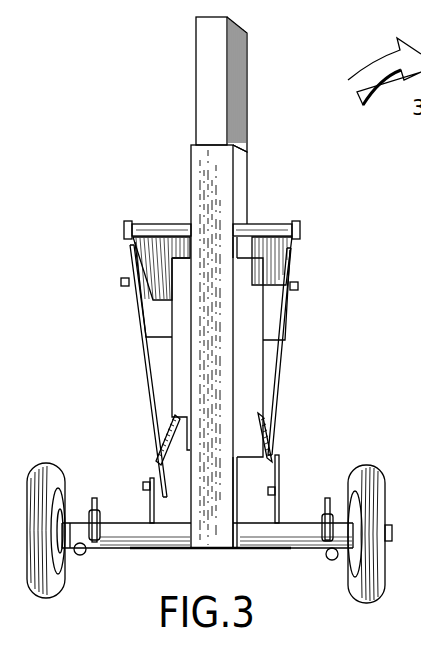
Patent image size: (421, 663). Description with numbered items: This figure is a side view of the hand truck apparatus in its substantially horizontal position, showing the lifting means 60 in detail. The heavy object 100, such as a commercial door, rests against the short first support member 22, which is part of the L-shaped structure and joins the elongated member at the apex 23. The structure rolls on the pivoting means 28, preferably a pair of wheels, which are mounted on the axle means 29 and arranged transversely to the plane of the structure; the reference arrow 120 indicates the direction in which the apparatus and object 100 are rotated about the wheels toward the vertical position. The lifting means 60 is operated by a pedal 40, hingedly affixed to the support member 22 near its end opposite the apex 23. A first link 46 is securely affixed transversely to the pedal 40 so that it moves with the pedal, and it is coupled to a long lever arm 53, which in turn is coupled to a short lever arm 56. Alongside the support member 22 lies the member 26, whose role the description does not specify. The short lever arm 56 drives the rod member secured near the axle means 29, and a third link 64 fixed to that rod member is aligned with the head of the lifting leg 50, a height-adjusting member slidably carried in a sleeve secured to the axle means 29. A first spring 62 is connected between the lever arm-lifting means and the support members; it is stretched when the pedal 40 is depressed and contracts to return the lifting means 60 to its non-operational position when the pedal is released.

The heavy object 100 is at (240, 50).
The first support member 22 is at (203, 163).
The pedal 40 is at (145, 223).
The first link 46 is at (132, 262).
The lifting means 60 is at (118, 303).
The long lever arm 53 is at (140, 332).
The bracket 26 is at (177, 360).
The first spring 62 is at (160, 423).
The short lever arm 56 is at (152, 508).
The third link 64 is at (96, 500).
The axle means 29 is at (150, 548).
The apex 23 is at (226, 553).
The lifting leg 50 is at (81, 556).
The pivoting means 28 is at (375, 485).
The reference arrow 120 is at (372, 75).